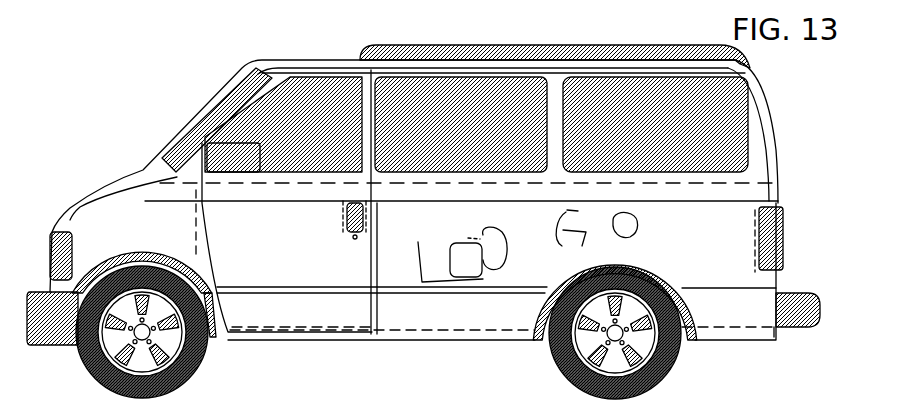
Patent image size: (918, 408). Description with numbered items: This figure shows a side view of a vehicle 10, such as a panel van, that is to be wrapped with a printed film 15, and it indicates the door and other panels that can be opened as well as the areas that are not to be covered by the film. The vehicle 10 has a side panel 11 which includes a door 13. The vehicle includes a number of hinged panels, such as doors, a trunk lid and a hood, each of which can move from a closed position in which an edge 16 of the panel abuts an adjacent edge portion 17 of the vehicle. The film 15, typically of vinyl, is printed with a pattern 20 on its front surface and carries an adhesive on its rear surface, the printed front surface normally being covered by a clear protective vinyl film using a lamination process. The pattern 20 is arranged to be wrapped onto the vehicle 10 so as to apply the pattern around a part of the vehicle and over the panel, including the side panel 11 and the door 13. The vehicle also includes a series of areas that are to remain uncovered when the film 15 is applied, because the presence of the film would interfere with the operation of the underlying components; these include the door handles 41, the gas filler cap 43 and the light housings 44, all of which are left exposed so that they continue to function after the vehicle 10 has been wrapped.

The vehicle 10 is at (461, 330).
The side panel 11 is at (453, 185).
The door 13 is at (297, 208).
The film 15 is at (752, 187).
The edge 16 is at (362, 263).
The edge portion 17 is at (380, 265).
The pattern 20 is at (657, 235).
The door handles 41 is at (352, 240).
The gas filler cap 43 is at (462, 243).
The light housings 44 is at (782, 240).